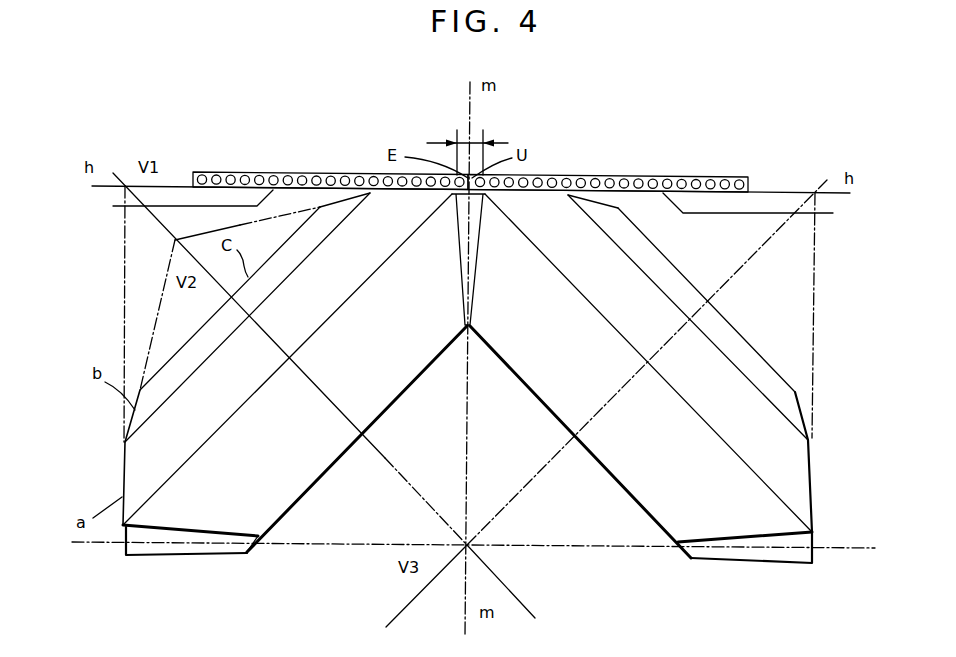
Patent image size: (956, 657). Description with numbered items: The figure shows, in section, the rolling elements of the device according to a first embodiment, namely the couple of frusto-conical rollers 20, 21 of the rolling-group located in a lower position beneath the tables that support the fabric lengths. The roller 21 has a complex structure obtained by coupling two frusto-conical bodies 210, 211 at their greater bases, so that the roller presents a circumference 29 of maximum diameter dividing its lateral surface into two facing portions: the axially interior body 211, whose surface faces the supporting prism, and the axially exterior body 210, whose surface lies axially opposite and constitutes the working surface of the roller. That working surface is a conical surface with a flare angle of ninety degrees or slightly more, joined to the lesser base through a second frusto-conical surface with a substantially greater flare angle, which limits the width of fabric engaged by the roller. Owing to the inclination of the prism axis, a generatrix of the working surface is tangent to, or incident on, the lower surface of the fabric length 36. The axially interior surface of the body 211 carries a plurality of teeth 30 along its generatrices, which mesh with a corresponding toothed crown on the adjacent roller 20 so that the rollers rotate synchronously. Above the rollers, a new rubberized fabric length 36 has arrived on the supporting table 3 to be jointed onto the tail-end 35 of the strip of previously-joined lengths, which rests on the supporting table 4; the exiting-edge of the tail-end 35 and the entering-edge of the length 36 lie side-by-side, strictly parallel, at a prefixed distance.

The supporting table 3 is at (247, 317).
The supporting table 4 is at (752, 205).
The roller 20 is at (680, 497).
The roller 21 is at (232, 498).
The circumference 29 is at (225, 423).
The teeth 30 is at (763, 555).
The tail-end of the strip 35 is at (614, 175).
The fabric length 36 is at (308, 170).
The axially exterior frusto-conical body 210 is at (140, 467).
The axially interior frusto-conical body 211 is at (298, 462).